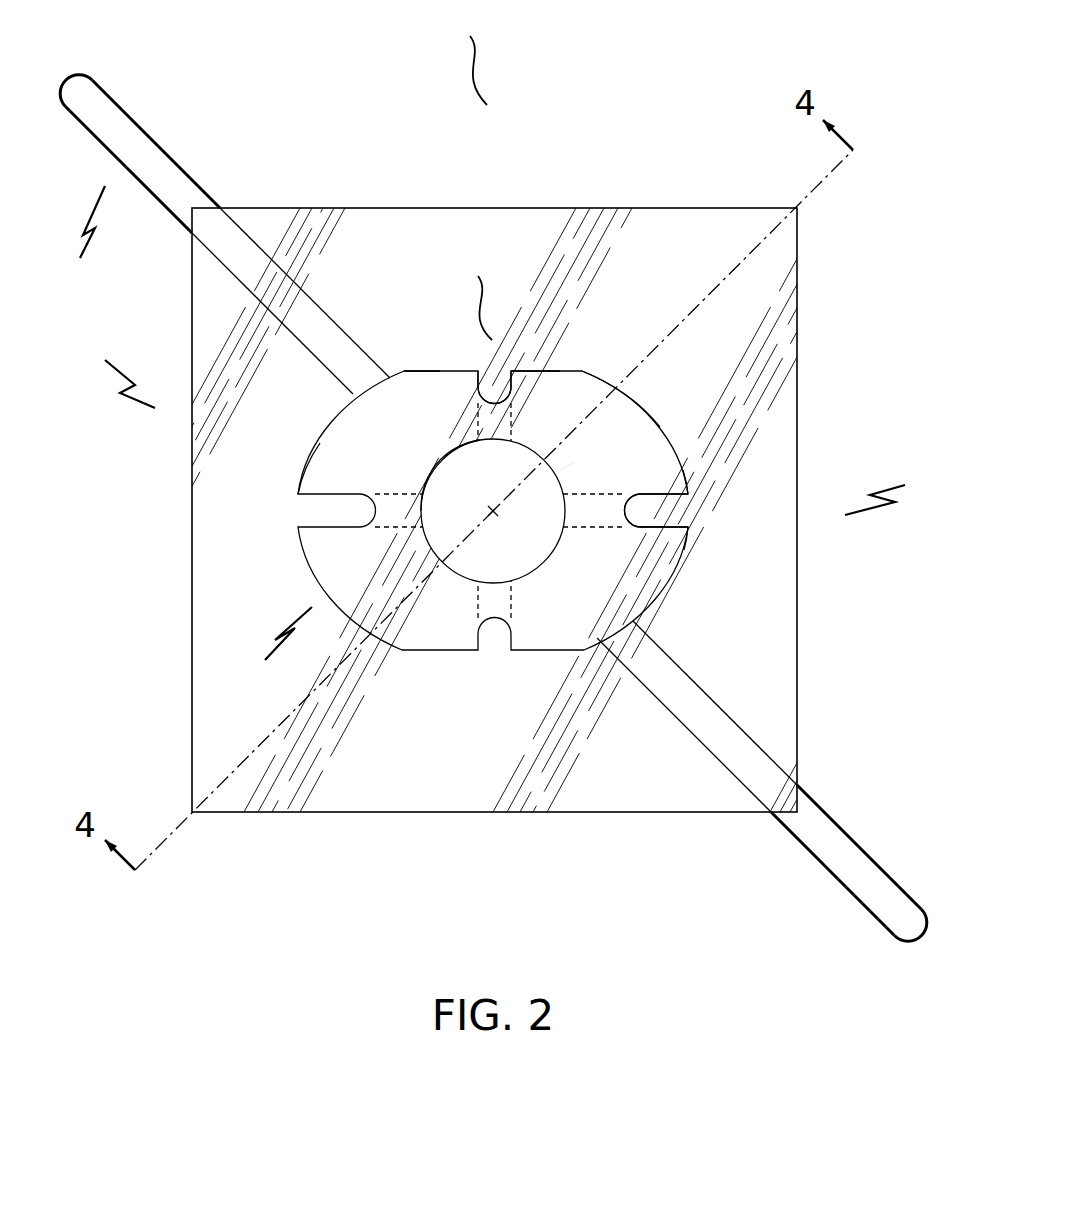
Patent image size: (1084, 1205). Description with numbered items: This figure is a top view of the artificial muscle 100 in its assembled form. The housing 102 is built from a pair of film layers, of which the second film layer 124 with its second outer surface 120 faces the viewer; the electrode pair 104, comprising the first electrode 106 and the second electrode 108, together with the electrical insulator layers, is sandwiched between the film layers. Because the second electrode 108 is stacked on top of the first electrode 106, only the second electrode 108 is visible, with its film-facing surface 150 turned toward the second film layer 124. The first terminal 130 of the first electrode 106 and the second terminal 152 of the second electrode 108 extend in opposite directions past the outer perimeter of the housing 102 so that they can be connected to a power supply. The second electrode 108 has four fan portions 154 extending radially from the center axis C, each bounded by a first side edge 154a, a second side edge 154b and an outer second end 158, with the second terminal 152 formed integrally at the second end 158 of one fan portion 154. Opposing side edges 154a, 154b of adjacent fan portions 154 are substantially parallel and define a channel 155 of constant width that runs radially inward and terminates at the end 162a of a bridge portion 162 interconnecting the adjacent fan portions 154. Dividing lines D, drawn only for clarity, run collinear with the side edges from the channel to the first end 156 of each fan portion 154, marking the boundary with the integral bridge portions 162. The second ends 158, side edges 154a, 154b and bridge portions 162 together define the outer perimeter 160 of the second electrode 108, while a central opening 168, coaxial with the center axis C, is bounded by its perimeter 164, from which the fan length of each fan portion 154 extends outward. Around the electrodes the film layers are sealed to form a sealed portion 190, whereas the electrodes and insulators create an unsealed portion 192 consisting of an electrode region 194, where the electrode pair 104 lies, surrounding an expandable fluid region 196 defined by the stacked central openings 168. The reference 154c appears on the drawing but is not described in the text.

The artificial muscle 100 is at (468, 54).
The housing 102 is at (108, 370).
The electrode pair 104 is at (474, 292).
The first electrode 106 is at (74, 238).
The second electrode 108 is at (269, 647).
The second outer surface 120 is at (668, 210).
The second film layer 124 is at (897, 486).
The first terminal 130 is at (108, 100).
The film-facing surface 150 is at (592, 388).
The second terminal 152 is at (826, 818).
The fan portion 154 is at (645, 385).
The first side edge 154a is at (692, 497).
The second side edge 154b is at (518, 389).
The edge portion 154c is at (690, 478).
The channel 155 is at (688, 527).
The first end 156 is at (550, 470).
The second end 158 is at (541, 371).
The outer perimeter 160 is at (414, 372).
The bridge portion 162 is at (588, 507).
The end of bridge portion 162a is at (627, 515).
The perimeter of central opening 164 is at (497, 582).
The central opening 168 is at (475, 463).
The sealed portion 190 is at (780, 437).
The unsealed portion 192 is at (578, 463).
The electrode region 194 is at (330, 460).
The expandable fluid region 196 is at (428, 466).
The center axis C is at (496, 505).
The dividing lines D is at (472, 408).